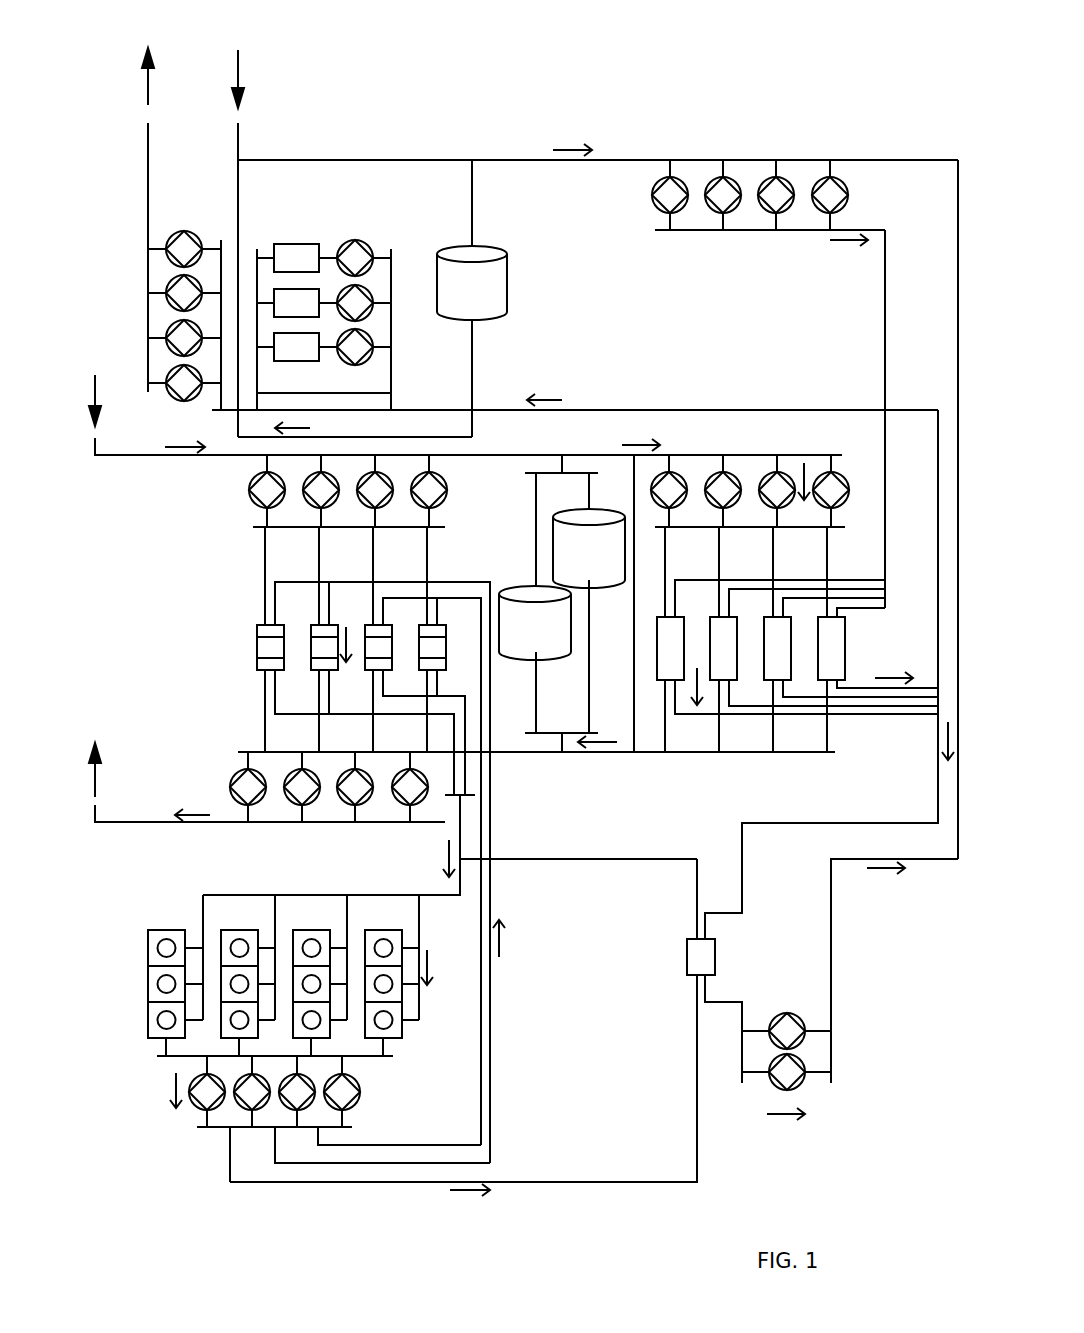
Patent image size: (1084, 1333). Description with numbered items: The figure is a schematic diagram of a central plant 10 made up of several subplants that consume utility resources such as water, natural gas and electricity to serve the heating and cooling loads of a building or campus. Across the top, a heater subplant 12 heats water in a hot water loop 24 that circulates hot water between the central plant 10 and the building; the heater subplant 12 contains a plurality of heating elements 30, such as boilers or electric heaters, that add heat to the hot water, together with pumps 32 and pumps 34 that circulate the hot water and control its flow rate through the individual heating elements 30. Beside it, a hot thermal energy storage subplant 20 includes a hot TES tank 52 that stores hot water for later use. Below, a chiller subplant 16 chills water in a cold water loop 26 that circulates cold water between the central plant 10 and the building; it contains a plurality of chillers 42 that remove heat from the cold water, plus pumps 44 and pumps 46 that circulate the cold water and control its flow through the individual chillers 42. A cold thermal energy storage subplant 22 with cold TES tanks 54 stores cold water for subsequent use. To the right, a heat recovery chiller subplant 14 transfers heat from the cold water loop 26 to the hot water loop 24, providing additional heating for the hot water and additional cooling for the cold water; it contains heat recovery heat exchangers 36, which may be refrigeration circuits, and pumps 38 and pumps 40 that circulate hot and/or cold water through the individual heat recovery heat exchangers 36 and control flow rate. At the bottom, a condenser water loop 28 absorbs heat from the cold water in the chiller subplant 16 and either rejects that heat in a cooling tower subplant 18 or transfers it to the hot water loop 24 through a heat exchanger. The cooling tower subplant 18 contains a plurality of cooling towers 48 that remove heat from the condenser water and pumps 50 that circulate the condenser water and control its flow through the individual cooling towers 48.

The central plant 10 is at (765, 78).
The heater subplant 12 is at (418, 146).
The heat recovery chiller subplant 14 is at (872, 742).
The chiller subplant 16 is at (200, 570).
The cooling tower subplant 18 is at (118, 970).
The hot thermal energy storage subplant 20 is at (535, 303).
The cold thermal energy storage subplant 22 is at (510, 528).
The hot water loop 24 is at (148, 180).
The cold water loop 26 is at (148, 456).
The condenser water loop 28 is at (690, 1183).
The heating elements 30 is at (280, 244).
The pumps 32 is at (198, 231).
The pumps 34 is at (360, 241).
The heat recovery heat exchangers 36 is at (845, 643).
The pumps 38 is at (843, 477).
The pumps 40 is at (850, 195).
The chillers 42 is at (257, 640).
The pumps 44 is at (230, 782).
The pumps 46 is at (251, 490).
The cooling towers 48 is at (402, 1030).
The pumps 50 is at (360, 1100).
The hot TES tank 52 is at (528, 257).
The cold TES tanks 54 is at (572, 517).